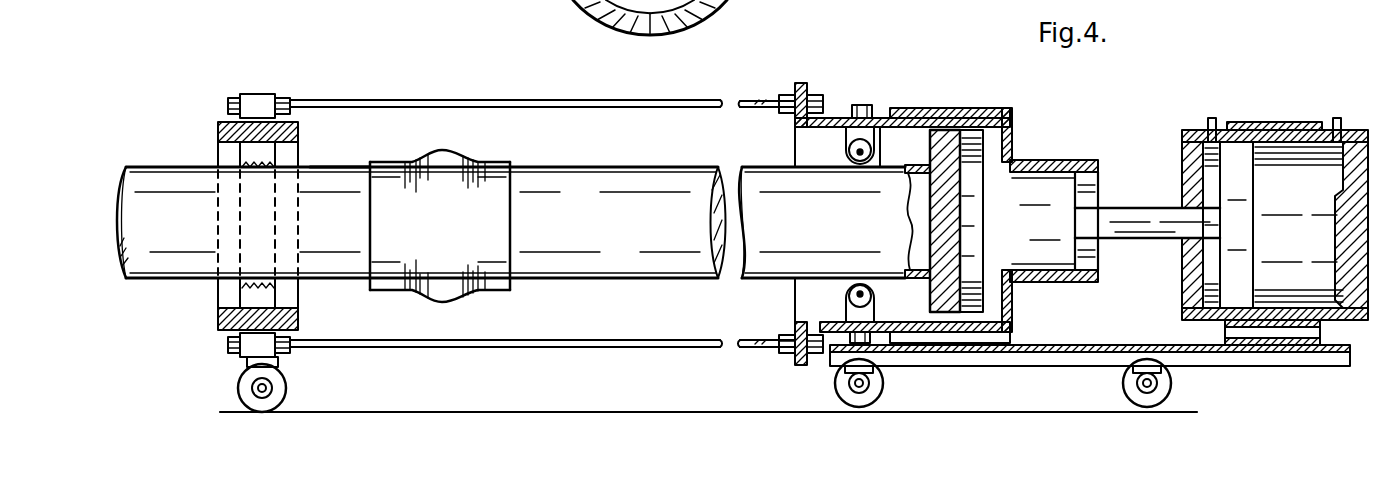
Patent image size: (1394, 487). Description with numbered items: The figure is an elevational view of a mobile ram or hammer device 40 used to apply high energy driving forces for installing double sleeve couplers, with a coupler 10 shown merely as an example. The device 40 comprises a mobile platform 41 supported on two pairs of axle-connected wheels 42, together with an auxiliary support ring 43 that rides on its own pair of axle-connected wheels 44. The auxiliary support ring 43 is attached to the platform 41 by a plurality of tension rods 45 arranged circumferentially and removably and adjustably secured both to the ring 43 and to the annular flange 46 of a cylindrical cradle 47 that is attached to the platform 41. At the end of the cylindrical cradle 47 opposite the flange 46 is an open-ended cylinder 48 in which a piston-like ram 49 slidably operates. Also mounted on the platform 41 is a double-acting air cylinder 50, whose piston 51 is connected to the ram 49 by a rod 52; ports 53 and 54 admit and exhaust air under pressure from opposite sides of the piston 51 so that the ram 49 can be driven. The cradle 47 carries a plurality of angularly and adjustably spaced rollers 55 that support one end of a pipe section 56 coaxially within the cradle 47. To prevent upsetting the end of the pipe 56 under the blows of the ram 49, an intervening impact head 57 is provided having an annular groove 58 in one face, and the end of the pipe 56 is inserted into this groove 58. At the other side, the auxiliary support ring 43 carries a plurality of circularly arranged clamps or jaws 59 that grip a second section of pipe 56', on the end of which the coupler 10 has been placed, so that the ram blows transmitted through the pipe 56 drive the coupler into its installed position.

The coupler 10 is at (486, 160).
The mobile ram or hammer device 40 is at (936, 110).
The mobile platform 41 is at (1118, 345).
The wheels 42 is at (884, 380).
The auxiliary support ring 43 is at (218, 134).
The wheels 44 is at (287, 382).
The tension rods 45 is at (462, 100).
The annular flange 46 is at (795, 86).
The cylindrical cradle 47 is at (834, 118).
The open-ended cylinder 48 is at (1040, 160).
The piston-like ram 49 is at (1130, 195).
The double-acting air cylinder 50 is at (1182, 152).
The piston 51 is at (1255, 208).
The rod 52 is at (1174, 238).
The port 53 is at (1208, 118).
The port 54 is at (1335, 118).
The rollers 55 is at (848, 152).
The pipe section 56 is at (511, 201).
The second section of pipe 56' is at (340, 142).
The impact head 57 is at (930, 302).
The annular groove 58 is at (930, 162).
The clamps or jaws 59 is at (245, 290).